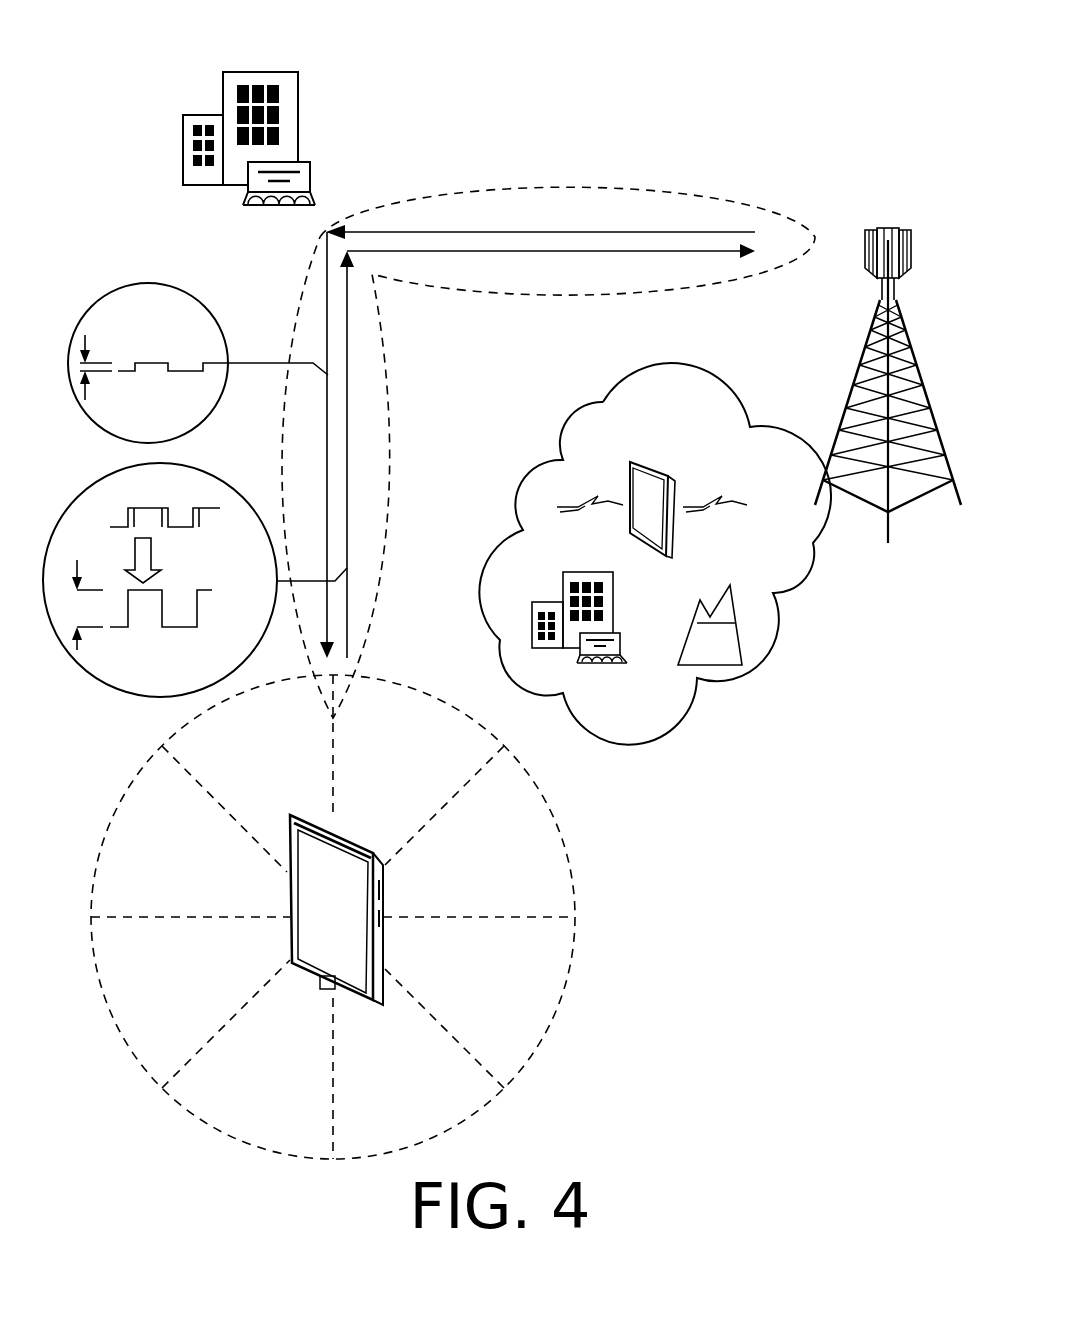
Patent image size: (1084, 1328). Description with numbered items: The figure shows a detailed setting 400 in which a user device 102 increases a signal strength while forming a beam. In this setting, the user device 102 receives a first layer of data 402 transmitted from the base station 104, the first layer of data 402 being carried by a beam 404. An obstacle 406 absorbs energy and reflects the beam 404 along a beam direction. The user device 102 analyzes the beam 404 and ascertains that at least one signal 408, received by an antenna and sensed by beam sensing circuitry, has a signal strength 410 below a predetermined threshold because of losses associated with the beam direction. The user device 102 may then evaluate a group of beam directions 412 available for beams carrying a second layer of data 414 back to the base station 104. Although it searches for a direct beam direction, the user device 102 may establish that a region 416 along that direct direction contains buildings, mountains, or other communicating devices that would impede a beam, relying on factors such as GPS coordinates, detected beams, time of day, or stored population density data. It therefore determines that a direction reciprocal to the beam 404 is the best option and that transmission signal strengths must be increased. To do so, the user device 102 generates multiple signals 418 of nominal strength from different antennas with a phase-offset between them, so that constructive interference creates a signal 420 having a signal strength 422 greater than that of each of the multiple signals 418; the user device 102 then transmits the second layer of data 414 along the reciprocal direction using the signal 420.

The detailed setting 400 is at (803, 70).
The first layer of data 402 is at (325, 303).
The beam 404 is at (302, 258).
The obstacle 406 is at (298, 117).
The signal 408 is at (148, 363).
The signal strength 410 is at (85, 395).
The group of beam directions 412 is at (558, 1008).
The second layer of data 414 is at (348, 342).
The region 416 is at (690, 716).
The multiple signals 418 is at (147, 508).
The signal 420 is at (200, 590).
The signal strength 422 is at (77, 648).
The user device 102 is at (288, 963).
The base station 104 is at (855, 393).